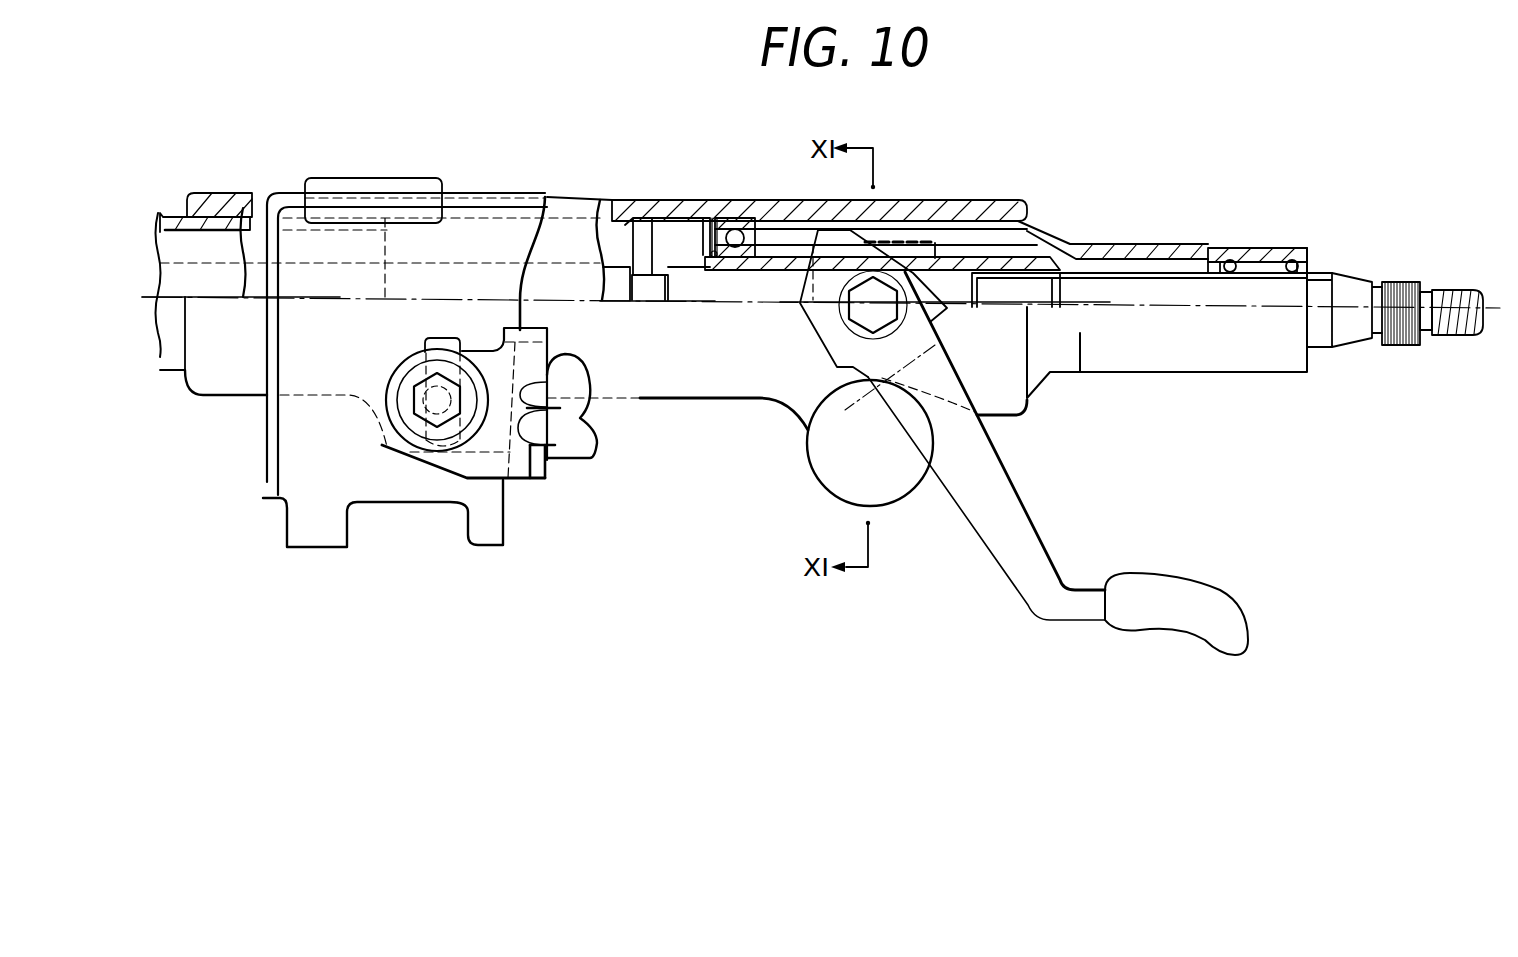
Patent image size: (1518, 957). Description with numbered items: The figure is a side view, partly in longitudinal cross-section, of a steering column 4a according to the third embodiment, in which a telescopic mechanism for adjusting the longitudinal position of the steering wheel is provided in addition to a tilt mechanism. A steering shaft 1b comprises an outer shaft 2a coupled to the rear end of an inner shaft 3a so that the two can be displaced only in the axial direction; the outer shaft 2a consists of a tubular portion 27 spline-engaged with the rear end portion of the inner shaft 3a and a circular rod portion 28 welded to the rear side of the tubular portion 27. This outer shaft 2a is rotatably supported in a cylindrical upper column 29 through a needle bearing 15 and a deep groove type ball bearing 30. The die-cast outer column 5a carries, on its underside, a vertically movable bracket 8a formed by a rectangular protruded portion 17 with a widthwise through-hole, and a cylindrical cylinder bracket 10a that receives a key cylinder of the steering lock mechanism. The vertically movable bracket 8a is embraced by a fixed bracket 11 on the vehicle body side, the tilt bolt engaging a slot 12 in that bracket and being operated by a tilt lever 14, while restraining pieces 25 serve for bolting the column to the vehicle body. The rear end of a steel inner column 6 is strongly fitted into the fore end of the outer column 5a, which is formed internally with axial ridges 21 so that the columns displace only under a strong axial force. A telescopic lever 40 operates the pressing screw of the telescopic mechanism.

The steering shaft 1b is at (1095, 292).
The outer shaft 2a is at (995, 263).
The inner shaft 3a is at (615, 277).
The steering column 4a is at (658, 203).
The outer column 5a is at (753, 203).
The inner column 6 is at (195, 222).
The vertically movable bracket 8a is at (389, 447).
The cylinder bracket 10a is at (905, 477).
The fixed bracket 11 is at (322, 330).
The slot 12 is at (468, 453).
The tilt lever 14 is at (580, 457).
The needle bearing 15 is at (1262, 268).
The protruded portion 17 is at (507, 480).
The ridges 21 is at (222, 220).
The restraining pieces 25 is at (385, 178).
The tubular portion 27 is at (745, 262).
The circular rod portion 28 is at (1210, 293).
The upper column 29 is at (937, 220).
The deep groove type ball bearing 30 is at (735, 238).
The telescopic lever 40 is at (1018, 568).